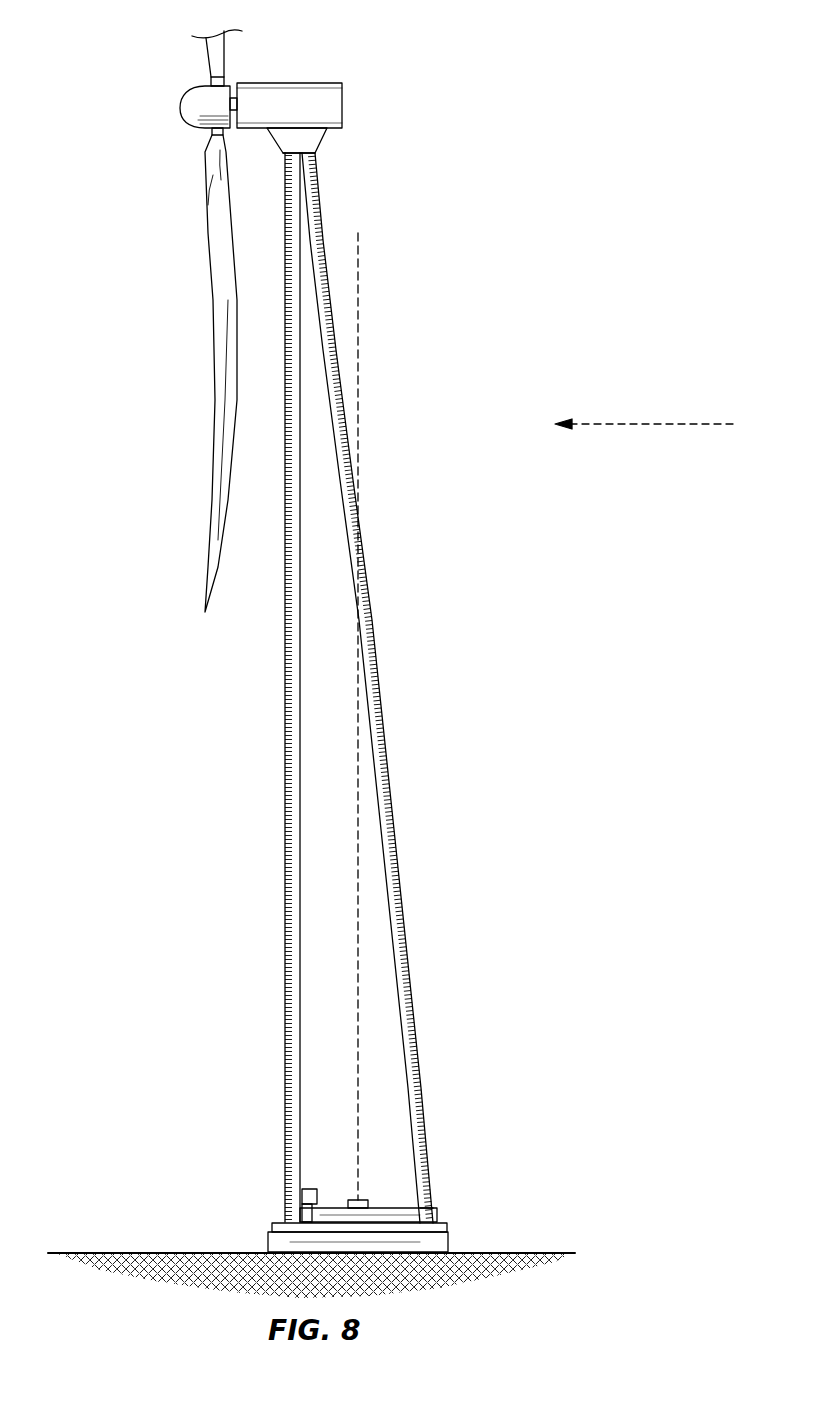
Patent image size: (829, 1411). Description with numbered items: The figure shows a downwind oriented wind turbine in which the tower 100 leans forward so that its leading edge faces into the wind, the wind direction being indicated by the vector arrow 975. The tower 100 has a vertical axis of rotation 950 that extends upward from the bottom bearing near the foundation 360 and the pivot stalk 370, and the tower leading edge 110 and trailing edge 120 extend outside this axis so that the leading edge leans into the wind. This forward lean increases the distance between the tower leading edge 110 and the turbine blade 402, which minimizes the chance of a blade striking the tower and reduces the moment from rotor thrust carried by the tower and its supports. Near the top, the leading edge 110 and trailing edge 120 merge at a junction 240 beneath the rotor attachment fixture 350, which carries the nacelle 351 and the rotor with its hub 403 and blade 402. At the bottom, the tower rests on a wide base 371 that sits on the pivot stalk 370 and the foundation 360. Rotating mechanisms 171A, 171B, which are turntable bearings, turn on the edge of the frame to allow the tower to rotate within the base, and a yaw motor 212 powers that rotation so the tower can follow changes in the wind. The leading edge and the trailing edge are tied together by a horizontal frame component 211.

The tower 100 is at (387, 271).
The tower leading edge 110 is at (285, 857).
The trailing edge 120 is at (393, 827).
The junction 240 is at (293, 157).
The rotor attachment fixture 350 is at (313, 138).
The nacelle 351 is at (332, 100).
The foundation 360 is at (268, 1247).
The pivot stalk 370 is at (355, 1200).
The base 371 is at (447, 1228).
The turbine blade 402 is at (212, 507).
The hub 403 is at (184, 104).
The vertical axis of rotation 950 is at (357, 325).
The vector arrow 975 is at (650, 424).
The rotating mechanism 171A is at (440, 1221).
The rotating mechanism 171B is at (298, 1220).
The horizontal frame component 211 is at (393, 1205).
The yaw motor 212 is at (300, 1197).